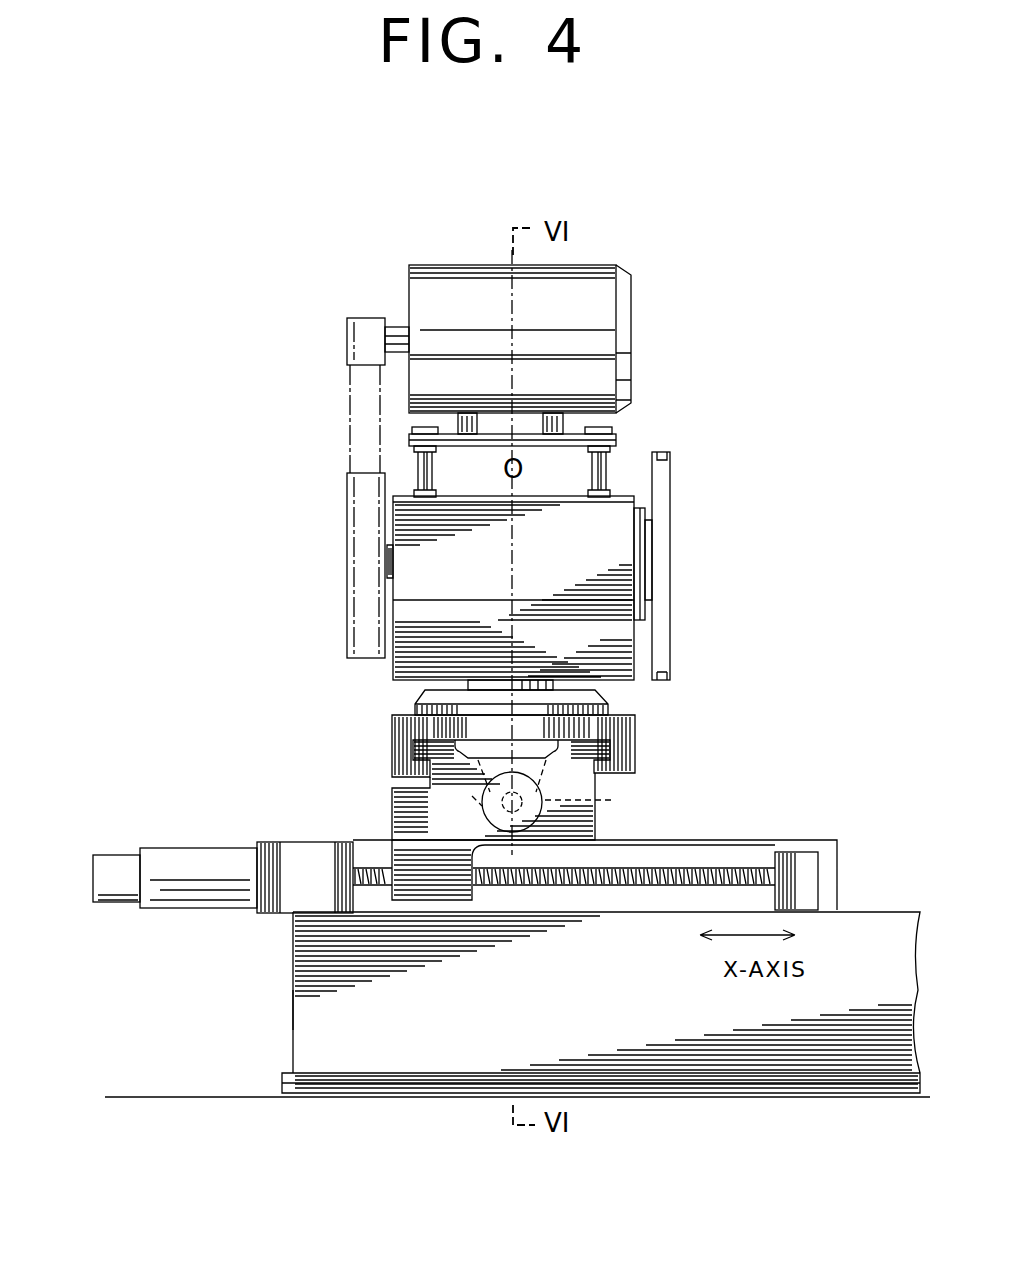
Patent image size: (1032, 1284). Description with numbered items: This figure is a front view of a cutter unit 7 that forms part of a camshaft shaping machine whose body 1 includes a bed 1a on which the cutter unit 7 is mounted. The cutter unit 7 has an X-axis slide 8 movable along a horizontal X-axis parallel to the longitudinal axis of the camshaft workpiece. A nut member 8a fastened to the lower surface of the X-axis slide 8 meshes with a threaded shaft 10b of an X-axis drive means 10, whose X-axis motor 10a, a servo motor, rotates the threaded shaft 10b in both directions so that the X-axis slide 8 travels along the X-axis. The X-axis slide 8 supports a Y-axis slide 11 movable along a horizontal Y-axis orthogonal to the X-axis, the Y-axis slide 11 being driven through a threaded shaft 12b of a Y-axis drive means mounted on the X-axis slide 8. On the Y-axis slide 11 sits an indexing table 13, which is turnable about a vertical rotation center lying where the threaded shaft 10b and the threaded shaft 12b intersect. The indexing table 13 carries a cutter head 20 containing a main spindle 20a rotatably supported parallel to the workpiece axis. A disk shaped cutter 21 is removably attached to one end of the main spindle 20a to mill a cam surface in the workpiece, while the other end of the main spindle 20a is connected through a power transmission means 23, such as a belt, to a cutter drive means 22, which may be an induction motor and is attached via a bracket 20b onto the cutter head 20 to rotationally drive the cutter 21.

The body 1 is at (283, 974).
The bed 1a is at (318, 1008).
The cutter unit 7 is at (376, 685).
The X-axis slide 8 is at (405, 812).
The nut member 8a is at (432, 882).
The X-axis drive means 10 is at (274, 828).
The X-axis motor 10a is at (194, 862).
The threaded shaft 10b is at (690, 866).
The Y-axis slide 11 is at (628, 720).
The threaded shaft 12b is at (568, 796).
The indexing table 13 is at (605, 650).
The cutter head 20 is at (605, 515).
The main spindle 20a is at (670, 562).
The bracket 20b is at (612, 436).
The disk shaped cutter 21 is at (660, 476).
The cutter drive means 22 is at (600, 283).
The power transmission means 23 is at (355, 398).